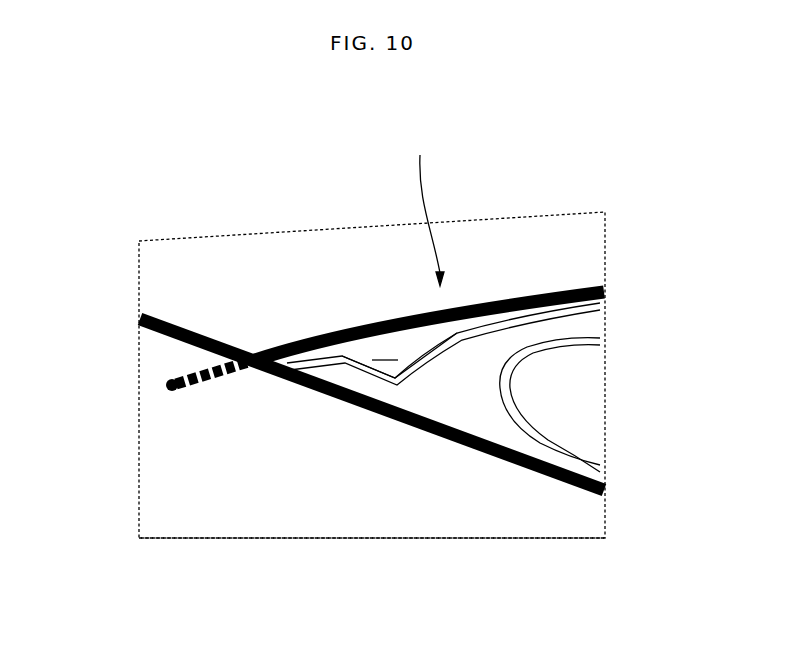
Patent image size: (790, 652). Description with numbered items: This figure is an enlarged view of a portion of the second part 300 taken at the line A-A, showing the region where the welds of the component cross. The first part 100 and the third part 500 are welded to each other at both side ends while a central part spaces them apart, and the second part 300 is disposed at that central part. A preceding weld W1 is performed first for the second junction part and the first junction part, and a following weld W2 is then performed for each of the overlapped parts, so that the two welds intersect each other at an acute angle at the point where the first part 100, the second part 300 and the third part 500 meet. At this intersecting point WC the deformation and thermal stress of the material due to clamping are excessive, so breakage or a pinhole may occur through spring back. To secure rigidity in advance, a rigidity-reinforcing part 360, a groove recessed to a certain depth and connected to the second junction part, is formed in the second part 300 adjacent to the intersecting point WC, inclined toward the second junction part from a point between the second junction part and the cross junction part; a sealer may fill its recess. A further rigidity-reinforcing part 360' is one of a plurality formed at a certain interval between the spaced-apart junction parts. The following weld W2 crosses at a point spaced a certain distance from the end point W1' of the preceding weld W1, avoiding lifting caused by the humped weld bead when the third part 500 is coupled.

The first part 100 is at (282, 242).
The second part 300 is at (592, 327).
The rigidity-reinforcing part 360 is at (389, 256).
The rigidity-reinforcing part 360' is at (615, 405).
The third part 500 is at (361, 503).
The preceding weld W1 is at (429, 237).
The end point of the preceding weld W1' is at (141, 397).
The following weld W2 is at (530, 468).
The intersecting point WC is at (257, 363).
The line A- A is at (428, 208).